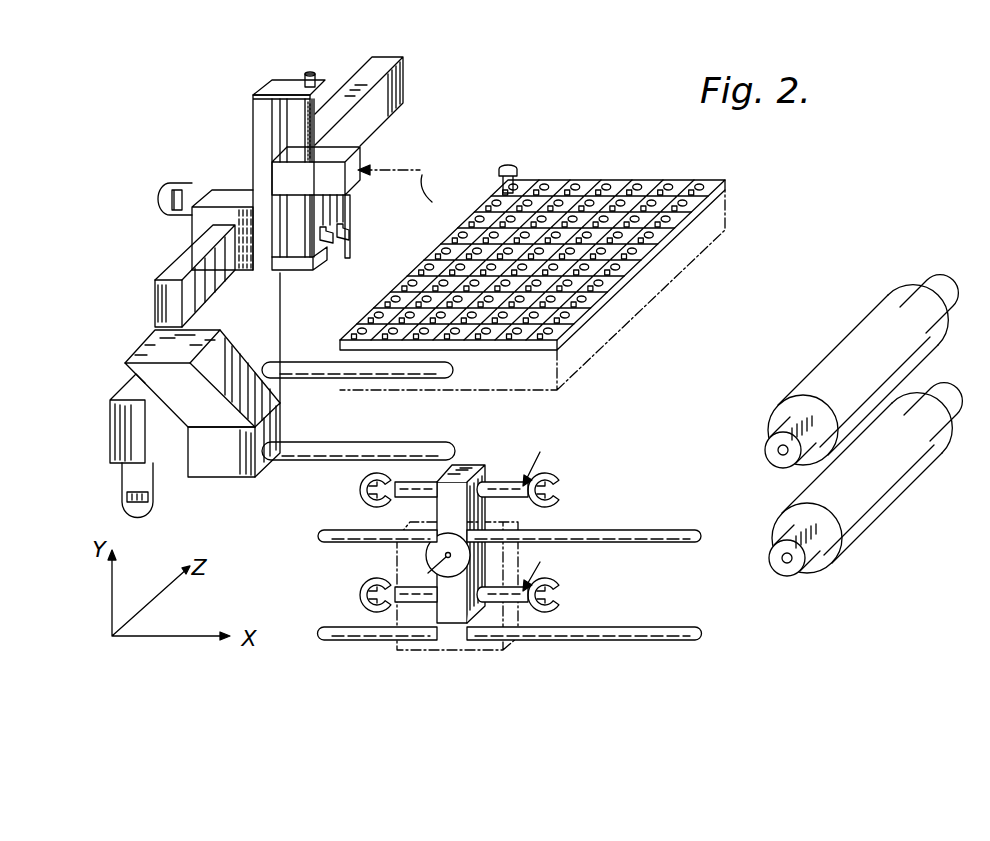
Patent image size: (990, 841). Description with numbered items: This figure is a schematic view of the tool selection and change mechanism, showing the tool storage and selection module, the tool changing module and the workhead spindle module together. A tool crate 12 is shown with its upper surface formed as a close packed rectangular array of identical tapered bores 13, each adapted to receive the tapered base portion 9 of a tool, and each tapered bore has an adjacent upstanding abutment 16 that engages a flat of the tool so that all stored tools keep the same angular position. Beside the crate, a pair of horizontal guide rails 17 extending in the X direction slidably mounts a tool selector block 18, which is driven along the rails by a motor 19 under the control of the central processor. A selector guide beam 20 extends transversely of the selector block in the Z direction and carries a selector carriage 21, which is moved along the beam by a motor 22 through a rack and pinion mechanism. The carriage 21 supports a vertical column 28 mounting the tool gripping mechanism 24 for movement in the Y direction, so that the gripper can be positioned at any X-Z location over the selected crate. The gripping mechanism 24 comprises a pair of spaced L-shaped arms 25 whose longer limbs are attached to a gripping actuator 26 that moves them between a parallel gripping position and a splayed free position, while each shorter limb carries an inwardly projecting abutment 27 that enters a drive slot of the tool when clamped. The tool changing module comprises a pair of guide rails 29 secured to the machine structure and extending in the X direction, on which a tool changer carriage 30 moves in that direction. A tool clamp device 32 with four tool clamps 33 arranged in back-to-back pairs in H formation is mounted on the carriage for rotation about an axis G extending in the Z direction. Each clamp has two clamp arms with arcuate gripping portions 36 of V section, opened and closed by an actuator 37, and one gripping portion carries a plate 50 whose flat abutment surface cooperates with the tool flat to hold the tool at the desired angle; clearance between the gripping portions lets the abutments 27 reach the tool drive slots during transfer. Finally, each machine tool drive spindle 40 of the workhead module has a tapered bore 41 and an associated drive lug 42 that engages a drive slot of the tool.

The tool base portion 9 is at (510, 164).
The tool crate 12 is at (664, 238).
The tapered bore 13 is at (650, 200).
The upstanding abutment 16 is at (652, 207).
The horizontal guide rails 17 is at (376, 442).
The tool selector block 18 is at (221, 477).
The motor 19 is at (152, 506).
The selector guide beam 20 is at (390, 58).
The selector carriage 21 is at (240, 190).
The motor 22 is at (169, 184).
The tool gripping mechanism 24 is at (407, 178).
The L-shaped arms 25 is at (345, 240).
The gripping actuator 26 is at (354, 147).
The inwardly projecting abutment 27 is at (322, 243).
The vertical column 28 is at (302, 82).
The guide rails 29 is at (660, 627).
The tool changer carriage 30 is at (427, 650).
The tool clamp device 32 is at (478, 465).
The tool clamps 33 is at (540, 508).
The arcuate gripping portions 36 is at (563, 604).
The actuator 37 is at (556, 507).
The machine tool drive spindle 40 is at (903, 428).
The tapered bore 41 is at (786, 565).
The drive lug 42 is at (771, 561).
The plate 50 is at (560, 588).
The axis G is at (426, 574).